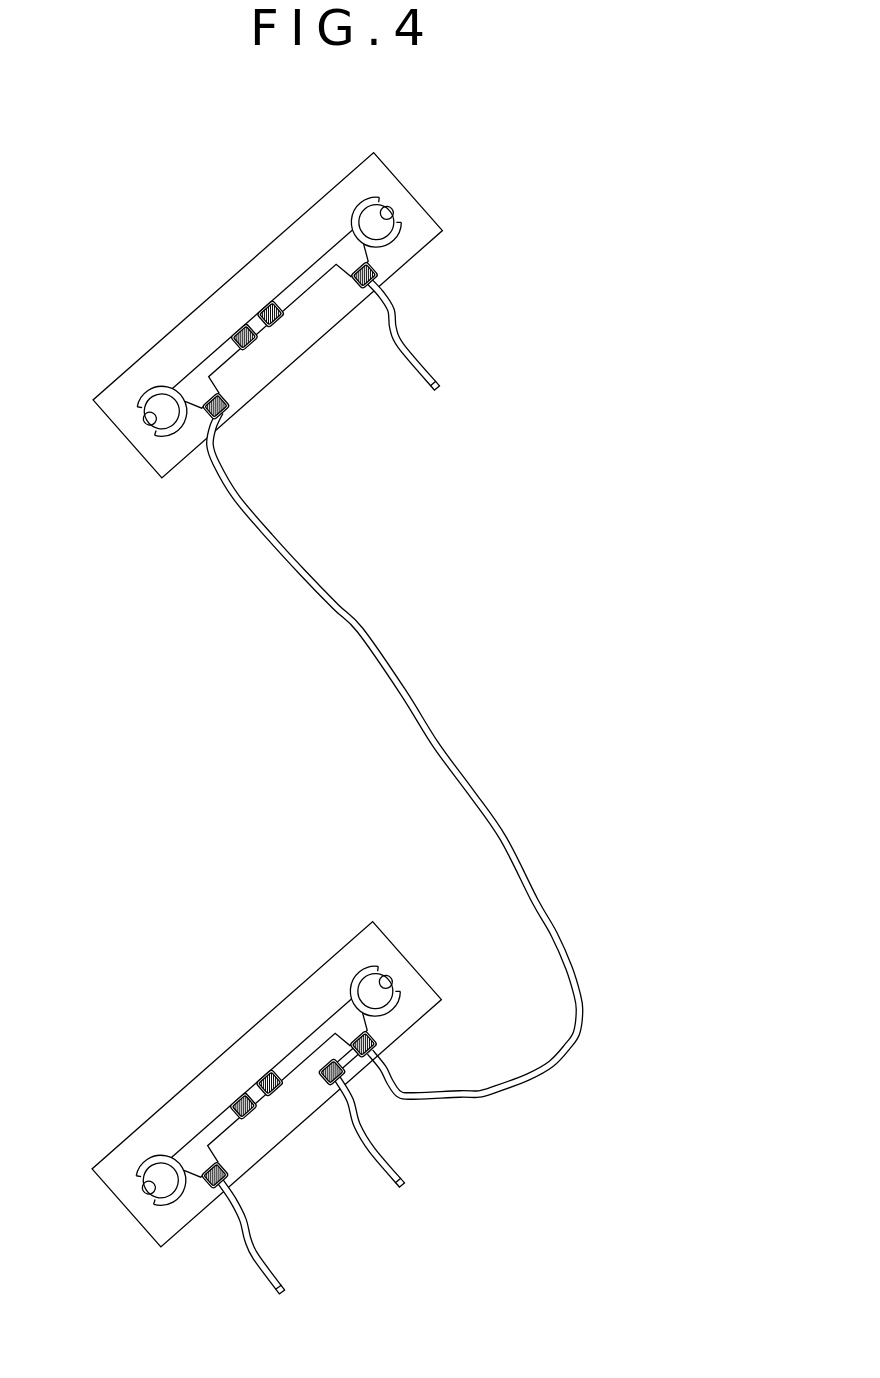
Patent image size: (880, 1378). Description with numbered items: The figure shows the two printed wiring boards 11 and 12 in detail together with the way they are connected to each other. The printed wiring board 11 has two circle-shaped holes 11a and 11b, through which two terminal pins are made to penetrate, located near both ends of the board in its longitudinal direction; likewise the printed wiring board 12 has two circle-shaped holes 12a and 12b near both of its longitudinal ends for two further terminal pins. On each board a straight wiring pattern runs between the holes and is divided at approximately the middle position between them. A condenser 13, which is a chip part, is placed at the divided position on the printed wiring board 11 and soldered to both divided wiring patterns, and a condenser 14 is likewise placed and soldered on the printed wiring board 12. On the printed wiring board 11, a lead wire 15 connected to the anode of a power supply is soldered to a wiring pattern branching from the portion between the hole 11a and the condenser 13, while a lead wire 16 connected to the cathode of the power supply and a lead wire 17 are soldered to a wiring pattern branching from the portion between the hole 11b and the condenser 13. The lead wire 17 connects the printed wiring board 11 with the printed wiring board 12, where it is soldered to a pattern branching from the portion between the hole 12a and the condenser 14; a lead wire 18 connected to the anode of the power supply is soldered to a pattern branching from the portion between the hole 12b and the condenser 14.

The printed wiring board 11 is at (217, 1077).
The hole 11a is at (150, 1195).
The hole 11b is at (383, 985).
The printed wiring board 12 is at (310, 280).
The hole 12a is at (152, 427).
The hole 12b is at (383, 217).
The condenser 13 is at (272, 1067).
The condenser 14 is at (258, 327).
The lead wire 15 is at (243, 1253).
The lead wire 16 is at (368, 1155).
The lead wire 17 is at (428, 712).
The lead wire 18 is at (402, 343).